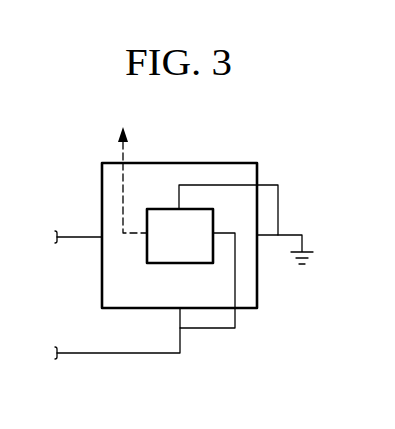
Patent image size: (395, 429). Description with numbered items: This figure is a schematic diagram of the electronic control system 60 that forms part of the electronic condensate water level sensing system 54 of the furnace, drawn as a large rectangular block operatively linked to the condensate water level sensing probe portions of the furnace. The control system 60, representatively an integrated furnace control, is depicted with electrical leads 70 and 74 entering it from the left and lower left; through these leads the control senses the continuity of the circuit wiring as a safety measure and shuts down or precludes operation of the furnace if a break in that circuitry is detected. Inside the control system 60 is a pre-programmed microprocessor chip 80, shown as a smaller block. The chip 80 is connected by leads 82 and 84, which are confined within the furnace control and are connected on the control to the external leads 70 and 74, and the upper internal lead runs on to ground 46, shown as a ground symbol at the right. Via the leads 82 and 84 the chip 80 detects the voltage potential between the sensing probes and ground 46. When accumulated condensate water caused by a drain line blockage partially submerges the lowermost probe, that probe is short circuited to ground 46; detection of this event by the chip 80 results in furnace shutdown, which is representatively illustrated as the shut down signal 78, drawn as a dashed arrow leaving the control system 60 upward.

The ground 46 is at (307, 248).
The electronic condensate water level sensing system 54 is at (106, 113).
The electronic control system 60 is at (192, 156).
The electrical lead 70 is at (118, 355).
The electrical lead 74 is at (78, 234).
The shut down signal 78 is at (117, 153).
The pre-programmed microprocessor chip 80 is at (195, 252).
The lead 82 is at (264, 183).
The lead 84 is at (207, 330).